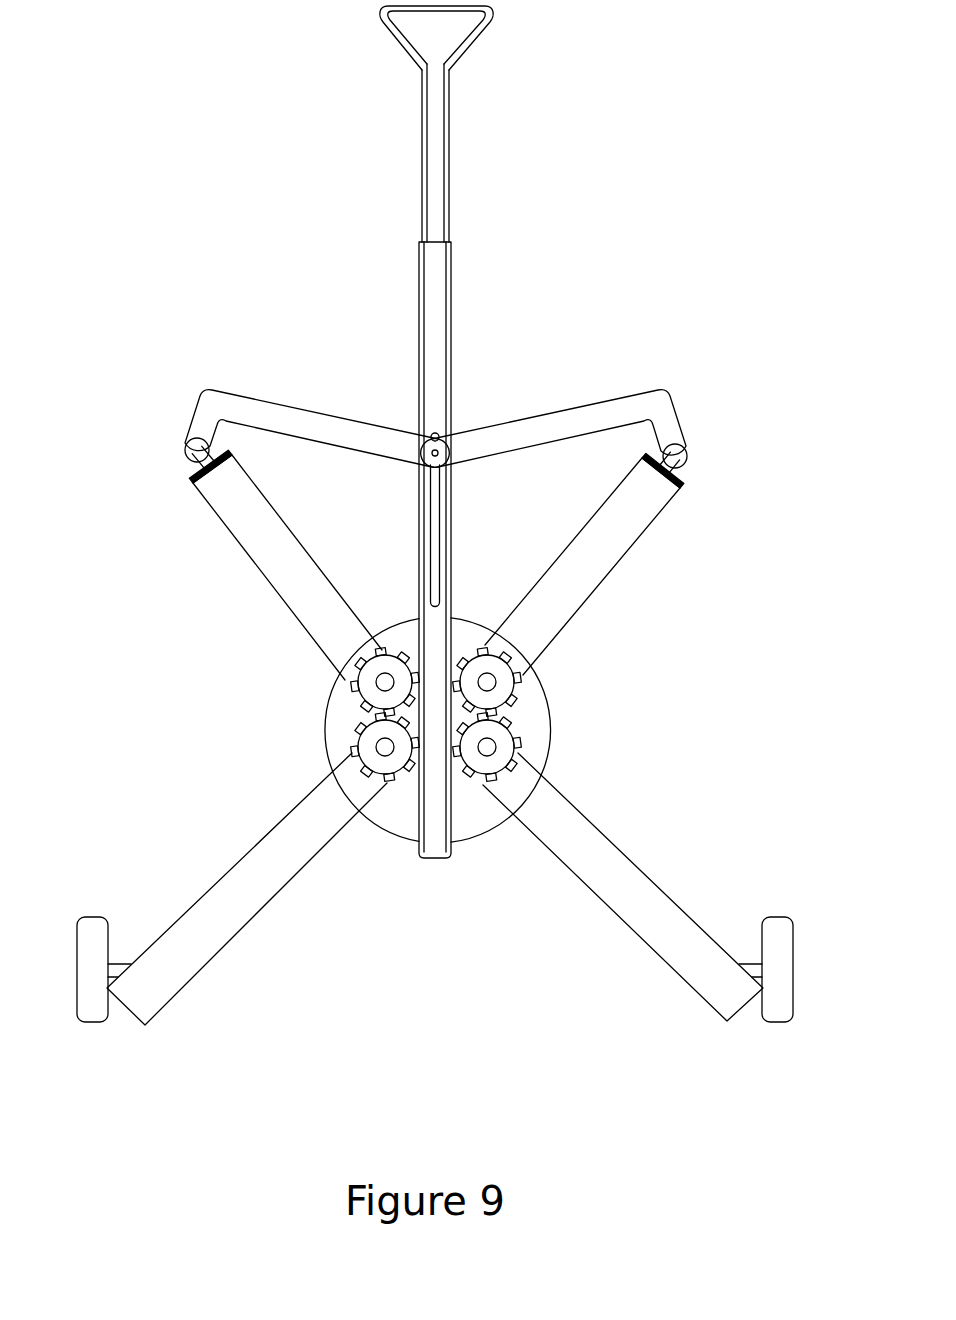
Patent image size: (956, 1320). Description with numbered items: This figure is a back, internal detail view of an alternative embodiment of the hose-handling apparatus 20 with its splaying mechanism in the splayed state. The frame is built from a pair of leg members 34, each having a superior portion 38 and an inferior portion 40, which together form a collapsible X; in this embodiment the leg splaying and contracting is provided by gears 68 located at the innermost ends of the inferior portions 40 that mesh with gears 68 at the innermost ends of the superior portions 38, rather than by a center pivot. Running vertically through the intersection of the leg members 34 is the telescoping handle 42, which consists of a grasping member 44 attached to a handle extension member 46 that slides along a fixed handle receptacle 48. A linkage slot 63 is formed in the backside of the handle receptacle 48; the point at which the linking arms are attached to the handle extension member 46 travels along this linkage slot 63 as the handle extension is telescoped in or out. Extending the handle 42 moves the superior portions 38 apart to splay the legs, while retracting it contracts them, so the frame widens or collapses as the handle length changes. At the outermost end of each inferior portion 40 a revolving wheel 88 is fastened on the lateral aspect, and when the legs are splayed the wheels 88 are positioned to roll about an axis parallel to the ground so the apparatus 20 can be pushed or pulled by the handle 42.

The apparatus 20 is at (653, 298).
The leg member 34 is at (435, 735).
The superior portion 38 is at (243, 522).
The inferior portion 40 is at (272, 873).
The handle 42 is at (385, 430).
The grasping member 44 is at (381, 18).
The handle extension member 46 is at (421, 141).
The handle receptacle 48 is at (419, 313).
The linkage slot 63 is at (436, 488).
The gears 68 is at (376, 677).
The wheel 88 is at (94, 935).